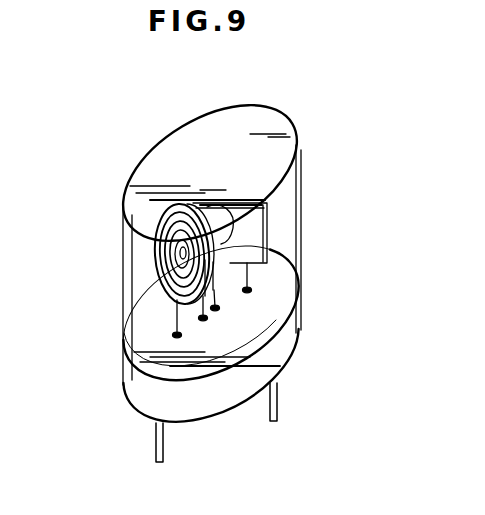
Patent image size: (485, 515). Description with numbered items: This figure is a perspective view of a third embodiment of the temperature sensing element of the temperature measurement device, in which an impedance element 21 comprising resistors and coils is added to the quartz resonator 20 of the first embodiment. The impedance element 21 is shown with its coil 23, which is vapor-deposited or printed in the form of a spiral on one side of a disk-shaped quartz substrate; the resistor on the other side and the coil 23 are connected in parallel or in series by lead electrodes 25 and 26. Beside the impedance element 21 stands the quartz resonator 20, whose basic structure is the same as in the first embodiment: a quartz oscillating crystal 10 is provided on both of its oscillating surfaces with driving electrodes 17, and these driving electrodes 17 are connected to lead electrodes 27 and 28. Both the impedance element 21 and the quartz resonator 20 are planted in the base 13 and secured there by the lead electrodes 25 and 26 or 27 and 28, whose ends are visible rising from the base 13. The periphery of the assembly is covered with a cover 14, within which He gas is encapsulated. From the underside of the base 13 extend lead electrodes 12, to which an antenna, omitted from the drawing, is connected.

The quartz oscillating crystal 10 is at (253, 233).
The lead electrodes 12 is at (155, 441).
The base 13 is at (167, 395).
The cover 14 is at (242, 128).
The driving electrodes 17 is at (268, 205).
The quartz resonator 20 is at (255, 197).
The impedance element 21 is at (151, 253).
The coil 23 is at (184, 236).
The lead electrode 25 is at (200, 312).
The lead electrode 26 is at (210, 321).
The lead electrode 27 is at (230, 290).
The lead electrode 28 is at (250, 273).